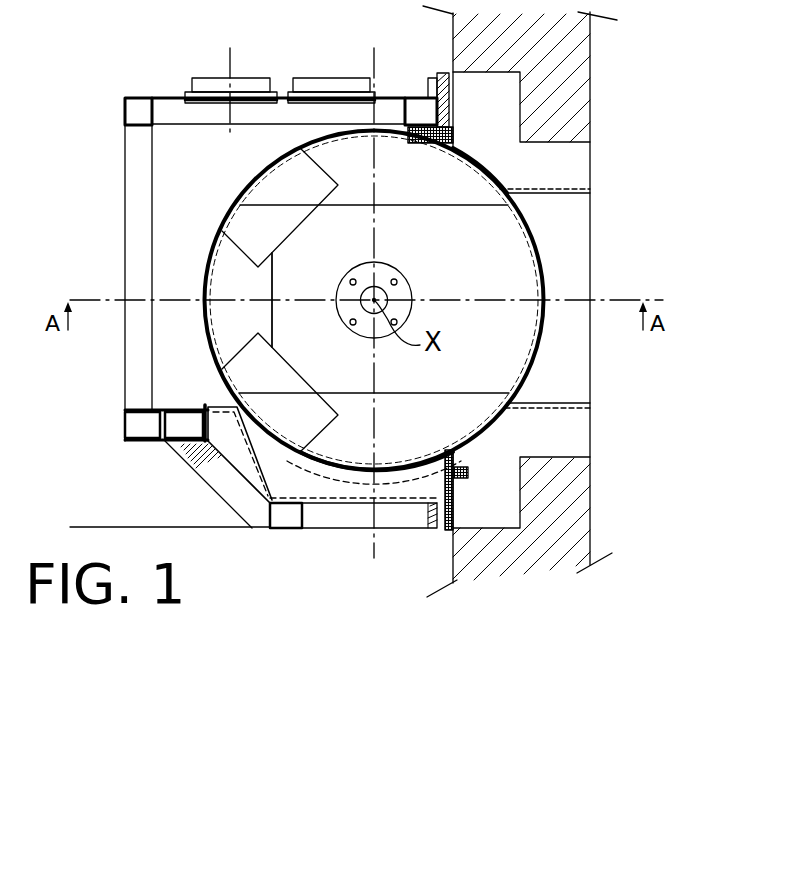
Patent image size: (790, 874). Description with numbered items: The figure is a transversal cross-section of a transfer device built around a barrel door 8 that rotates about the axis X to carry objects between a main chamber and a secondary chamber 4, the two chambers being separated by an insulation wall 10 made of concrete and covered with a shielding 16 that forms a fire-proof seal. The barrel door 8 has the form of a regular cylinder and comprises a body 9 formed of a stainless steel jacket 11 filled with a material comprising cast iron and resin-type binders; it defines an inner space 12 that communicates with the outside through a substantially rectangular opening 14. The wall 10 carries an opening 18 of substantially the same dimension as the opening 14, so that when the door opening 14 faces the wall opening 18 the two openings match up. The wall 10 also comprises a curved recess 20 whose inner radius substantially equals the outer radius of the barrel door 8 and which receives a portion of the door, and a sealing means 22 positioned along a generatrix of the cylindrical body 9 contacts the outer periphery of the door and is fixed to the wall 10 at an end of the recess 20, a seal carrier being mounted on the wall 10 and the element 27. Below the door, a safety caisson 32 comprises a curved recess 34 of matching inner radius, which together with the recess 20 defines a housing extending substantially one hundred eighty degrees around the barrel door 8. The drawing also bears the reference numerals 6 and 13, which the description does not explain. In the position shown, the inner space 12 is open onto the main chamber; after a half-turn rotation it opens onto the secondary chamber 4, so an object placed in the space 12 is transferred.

The secondary chamber 4 is at (186, 267).
The top plate with rails 6 is at (169, 100).
The barrel door 8 is at (357, 474).
The body 9 is at (255, 383).
The insulation wall 10 is at (576, 511).
The jacket 11 is at (224, 219).
The inner space 12 is at (374, 300).
The web plate 13 is at (243, 346).
The opening 14 is at (506, 392).
The shielding 16 is at (578, 405).
The opening 18 is at (583, 203).
The recess 20 is at (482, 201).
The sealing means 22 is at (462, 138).
The element 27 is at (423, 108).
The safety caisson 32 is at (248, 496).
The recess 34 is at (383, 453).